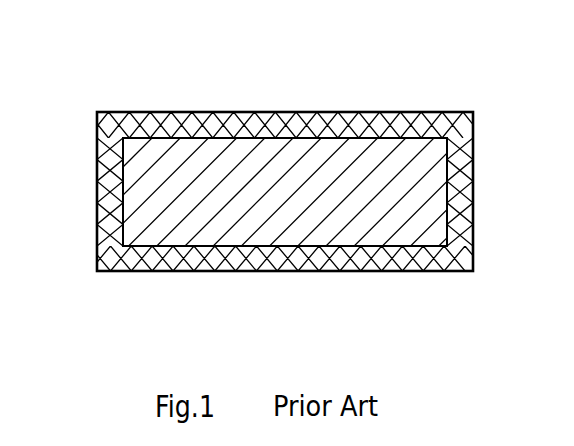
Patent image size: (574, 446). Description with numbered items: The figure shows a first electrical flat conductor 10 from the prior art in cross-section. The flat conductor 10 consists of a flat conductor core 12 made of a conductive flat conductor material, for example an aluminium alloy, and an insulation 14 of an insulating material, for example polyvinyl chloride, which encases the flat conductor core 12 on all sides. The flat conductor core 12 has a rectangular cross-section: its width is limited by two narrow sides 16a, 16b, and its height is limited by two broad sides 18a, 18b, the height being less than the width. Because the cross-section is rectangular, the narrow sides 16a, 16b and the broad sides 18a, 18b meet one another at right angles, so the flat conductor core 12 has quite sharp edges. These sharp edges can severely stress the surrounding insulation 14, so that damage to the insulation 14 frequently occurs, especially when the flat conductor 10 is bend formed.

The electrical flat conductor 10 is at (283, 178).
The flat conductor core 12 is at (392, 163).
The insulation 14 is at (284, 194).
The narrow side 16a is at (449, 212).
The narrow side 16b is at (115, 216).
The broad side 18a is at (230, 138).
The broad side 18b is at (197, 249).